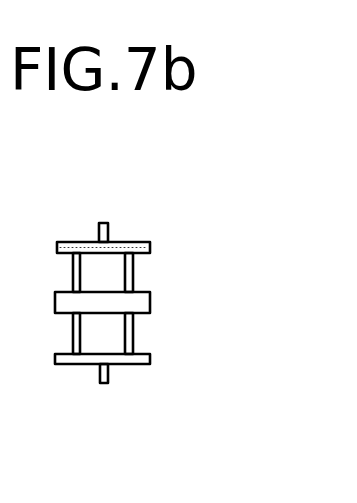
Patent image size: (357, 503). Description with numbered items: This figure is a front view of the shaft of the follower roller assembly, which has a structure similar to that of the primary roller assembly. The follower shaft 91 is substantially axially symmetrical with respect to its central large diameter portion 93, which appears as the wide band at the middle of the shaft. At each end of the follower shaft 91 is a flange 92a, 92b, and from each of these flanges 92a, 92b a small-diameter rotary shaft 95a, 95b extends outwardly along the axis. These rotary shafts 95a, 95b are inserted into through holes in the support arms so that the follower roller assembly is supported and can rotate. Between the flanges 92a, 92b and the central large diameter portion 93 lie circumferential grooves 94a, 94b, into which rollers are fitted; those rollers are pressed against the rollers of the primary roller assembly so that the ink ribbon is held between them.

The follower shaft 91 is at (130, 301).
The flange 92a is at (148, 255).
The flange 92b is at (150, 368).
The central large diameter portion 93 is at (150, 307).
The circumferential groove 94a is at (134, 283).
The circumferential groove 94b is at (134, 337).
The rotary shaft 95a is at (100, 232).
The rotary shaft 95b is at (100, 378).